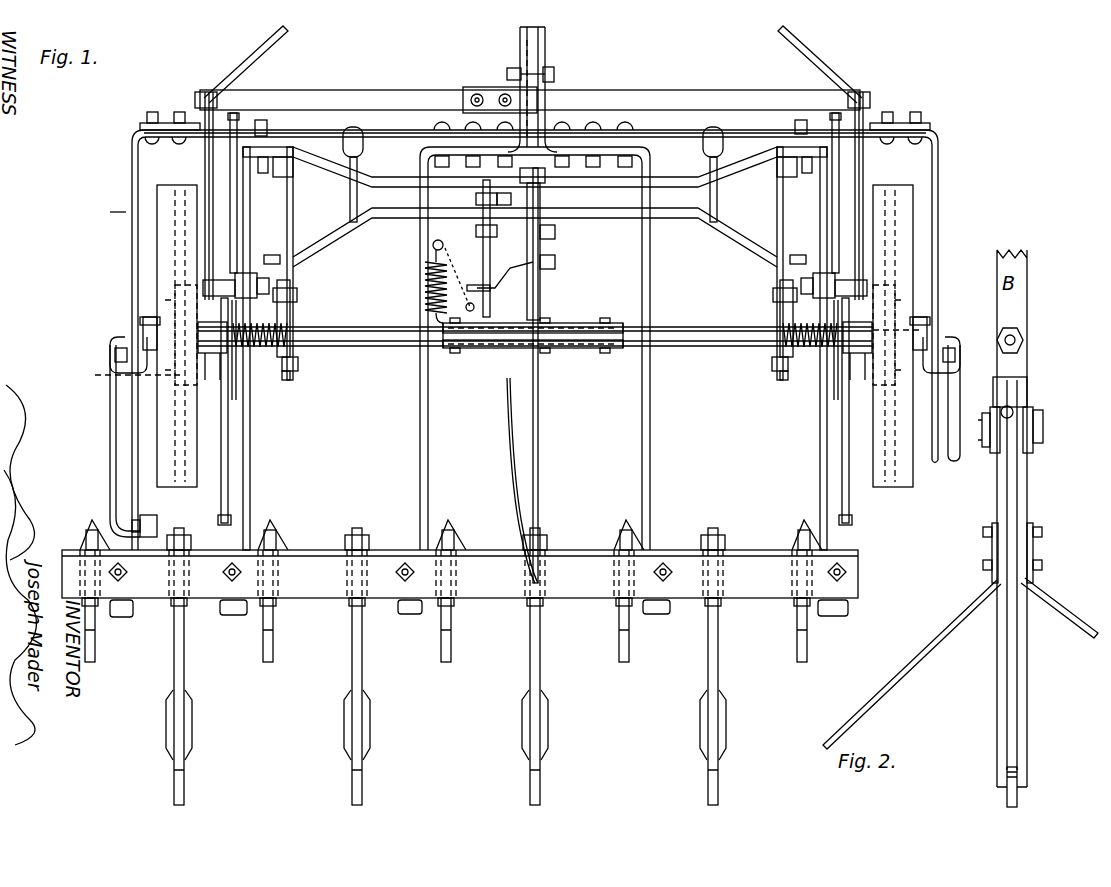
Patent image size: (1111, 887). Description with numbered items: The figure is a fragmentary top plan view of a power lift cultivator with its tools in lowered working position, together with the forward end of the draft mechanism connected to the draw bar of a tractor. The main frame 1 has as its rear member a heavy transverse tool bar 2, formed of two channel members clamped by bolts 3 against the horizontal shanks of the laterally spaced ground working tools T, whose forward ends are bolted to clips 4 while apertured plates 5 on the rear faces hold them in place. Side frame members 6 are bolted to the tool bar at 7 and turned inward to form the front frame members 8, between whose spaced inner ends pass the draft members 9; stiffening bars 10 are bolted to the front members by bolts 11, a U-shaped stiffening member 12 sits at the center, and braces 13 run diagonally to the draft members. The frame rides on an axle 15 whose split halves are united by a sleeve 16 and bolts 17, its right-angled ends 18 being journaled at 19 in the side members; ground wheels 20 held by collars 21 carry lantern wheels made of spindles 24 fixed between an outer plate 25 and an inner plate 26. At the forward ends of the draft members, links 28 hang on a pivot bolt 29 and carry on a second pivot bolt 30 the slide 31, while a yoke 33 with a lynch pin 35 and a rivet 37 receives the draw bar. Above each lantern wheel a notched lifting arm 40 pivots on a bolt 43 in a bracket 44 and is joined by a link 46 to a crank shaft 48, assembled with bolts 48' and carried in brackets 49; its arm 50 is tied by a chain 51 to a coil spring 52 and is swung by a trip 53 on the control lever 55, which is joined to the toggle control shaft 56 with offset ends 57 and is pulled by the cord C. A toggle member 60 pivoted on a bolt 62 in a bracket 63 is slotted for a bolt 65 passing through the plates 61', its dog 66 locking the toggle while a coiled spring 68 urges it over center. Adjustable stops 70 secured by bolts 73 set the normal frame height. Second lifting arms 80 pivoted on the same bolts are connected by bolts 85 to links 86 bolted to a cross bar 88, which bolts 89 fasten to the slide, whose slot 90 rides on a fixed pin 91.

In FIG. 1, the main frame 1 is at (109, 215).
In FIG. 1, the tool bar 2 is at (575, 600).
In FIG. 1, the bolts 3 is at (128, 572).
In FIG. 1, the plates or clips 4 is at (278, 522).
In FIG. 1, the apertured plates 5 is at (247, 606).
In FIG. 1, the side frame members 6 is at (133, 425).
In FIG. 1, the bolted connection 7 is at (127, 617).
In FIG. 1, the front frame members 8 is at (328, 137).
In FIG. 1, the draft members 9 is at (520, 41).
In FIG. 2, the draft members 9 is at (997, 709).
In FIG. 1, the stiffening bars 10 is at (250, 457).
In FIG. 1, the bolts 11 is at (268, 124).
In FIG. 1, the stiffening member 12 is at (420, 463).
In FIG. 1, the braces 13 is at (264, 52).
In FIG. 2, the braces 13 is at (888, 683).
In FIG. 1, the axle 15 is at (362, 346).
In FIG. 1, the split sleeve 16 is at (583, 326).
In FIG. 1, the bolts 17 is at (453, 348).
In FIG. 1, the axle ends 18 is at (110, 440).
In FIG. 1, the journals 19 is at (148, 528).
In FIG. 1, the ground wheels 20 is at (165, 458).
In FIG. 1, the collars 21 is at (145, 320).
In FIG. 1, the spindles 24 is at (212, 380).
In FIG. 1, the disk or plate 25 is at (140, 372).
In FIG. 1, the plate 26 is at (235, 382).
In FIG. 2, the links 28 is at (995, 455).
In FIG. 2, the pivot bolt 29 is at (986, 447).
In FIG. 2, the pivot bolt 30 is at (982, 417).
In FIG. 1, the slide 31 is at (546, 28).
In FIG. 2, the slide 31 is at (1007, 800).
In FIG. 2, the yoke 33 is at (1019, 392).
In FIG. 2, the lynch pin 35 is at (1023, 342).
In FIG. 2, the rivet 37 is at (1013, 412).
In FIG. 1, the lifting arm 40 is at (224, 498).
In FIG. 1, the pivot bolt 43 is at (258, 277).
In FIG. 1, the bracket 44 is at (245, 273).
In FIG. 1, the link 46 is at (238, 120).
In FIG. 1, the crank shaft 48 is at (535, 179).
In FIG. 1, the bolts 48' is at (472, 248).
In FIG. 1, the brackets 49 is at (358, 185).
In FIG. 1, the arm 50 is at (482, 276).
In FIG. 1, the chain 51 is at (463, 282).
In FIG. 1, the coil spring 52 is at (428, 256).
In FIG. 1, the trip 53 is at (490, 283).
In FIG. 1, the control lever 55 is at (540, 418).
In FIG. 1, the toggle control shaft 56 is at (603, 218).
In FIG. 1, the angular offset 57 is at (270, 254).
In FIG. 1, the toggle member 60 is at (293, 207).
In FIG. 1, the plates 61' is at (535, 318).
In FIG. 1, the bolt 62 is at (290, 172).
In FIG. 1, the bracket 63 is at (280, 172).
In FIG. 1, the bolt 65 is at (297, 294).
In FIG. 1, the dog 66 is at (299, 367).
In FIG. 1, the spring 68 is at (262, 348).
In FIG. 1, the adjustable stops 70 is at (118, 340).
In FIG. 1, the bolts 73 is at (114, 352).
In FIG. 1, the lifting arms 80 is at (209, 158).
In FIG. 1, the bolt 85 is at (203, 283).
In FIG. 1, the link 86 is at (204, 172).
In FIG. 1, the cross bar 88 is at (349, 100).
In FIG. 1, the bolts 89 is at (504, 93).
In FIG. 1, the slot 90 is at (548, 66).
In FIG. 1, the pin 91 is at (556, 77).
In FIG. 1, the cord C is at (512, 458).
In FIG. 1, the ground working tools T is at (96, 660).